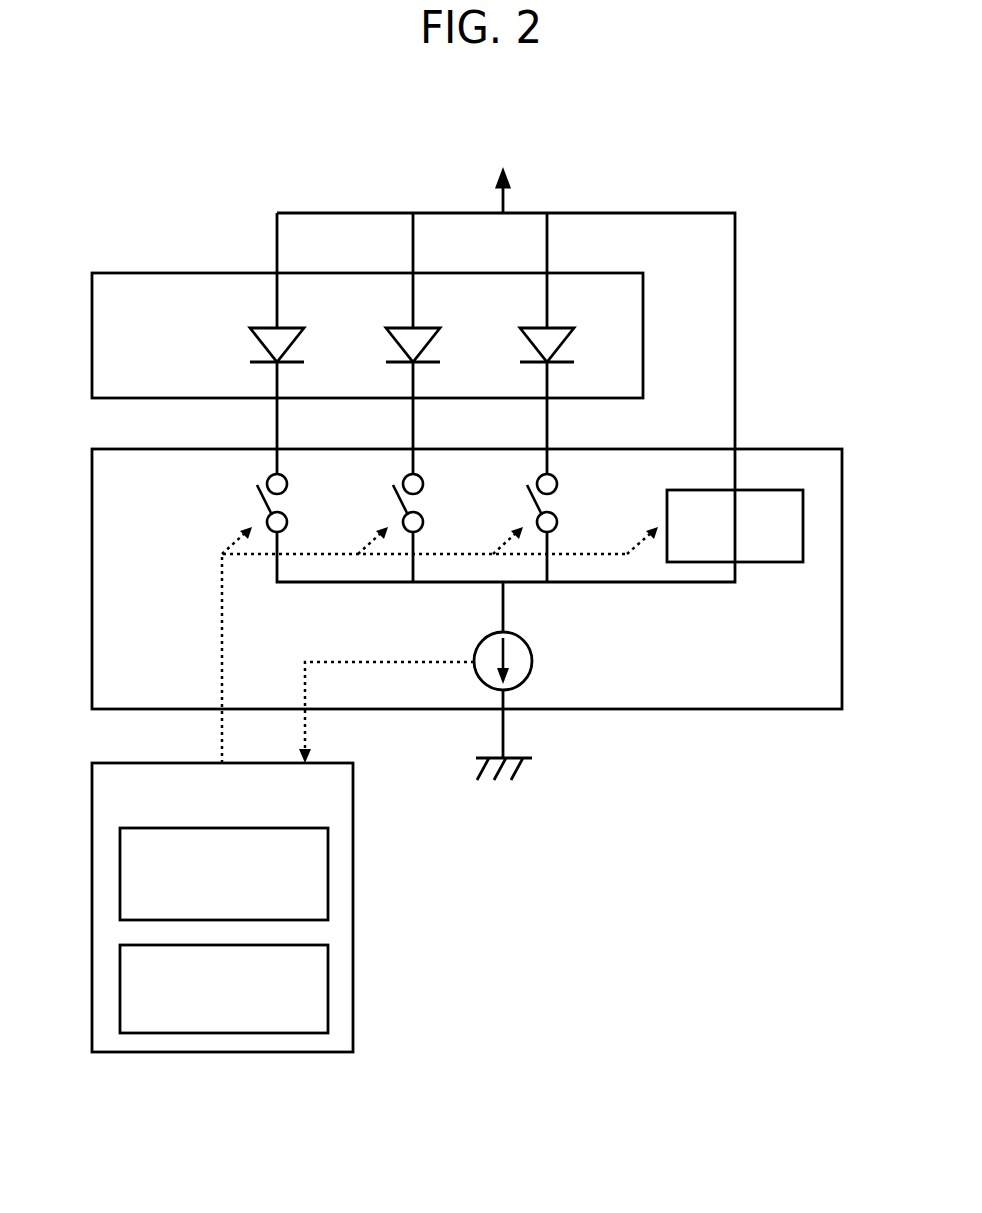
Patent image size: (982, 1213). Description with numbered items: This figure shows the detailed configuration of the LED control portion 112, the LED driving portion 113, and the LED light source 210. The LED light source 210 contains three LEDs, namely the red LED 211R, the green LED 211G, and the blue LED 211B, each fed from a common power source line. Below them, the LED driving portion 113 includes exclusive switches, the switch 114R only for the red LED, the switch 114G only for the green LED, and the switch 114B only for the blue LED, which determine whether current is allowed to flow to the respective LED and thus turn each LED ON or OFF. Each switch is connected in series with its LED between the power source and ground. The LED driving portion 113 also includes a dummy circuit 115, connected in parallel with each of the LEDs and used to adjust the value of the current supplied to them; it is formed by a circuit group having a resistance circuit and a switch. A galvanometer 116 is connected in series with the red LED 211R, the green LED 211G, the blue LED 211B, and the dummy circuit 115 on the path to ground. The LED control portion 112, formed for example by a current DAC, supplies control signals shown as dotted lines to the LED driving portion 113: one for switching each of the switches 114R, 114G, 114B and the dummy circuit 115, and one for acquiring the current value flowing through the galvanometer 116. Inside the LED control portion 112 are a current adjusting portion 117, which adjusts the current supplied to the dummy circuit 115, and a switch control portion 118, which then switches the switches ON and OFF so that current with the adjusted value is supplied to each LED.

The LED light source 210 is at (124, 273).
The red LED 211R is at (307, 306).
The green LED 211G is at (444, 306).
The blue LED 211B is at (581, 306).
The LED driving portion 113 is at (124, 449).
The switch only for red LED 114R is at (287, 516).
The switch only for green LED 114G is at (423, 516).
The switch only for blue LED 114B is at (557, 516).
The dummy circuit 115 is at (760, 490).
The galvanometer 116 is at (530, 647).
The LED control portion 112 is at (124, 763).
The current adjusting portion 117 is at (328, 848).
The switch control portion 118 is at (328, 966).